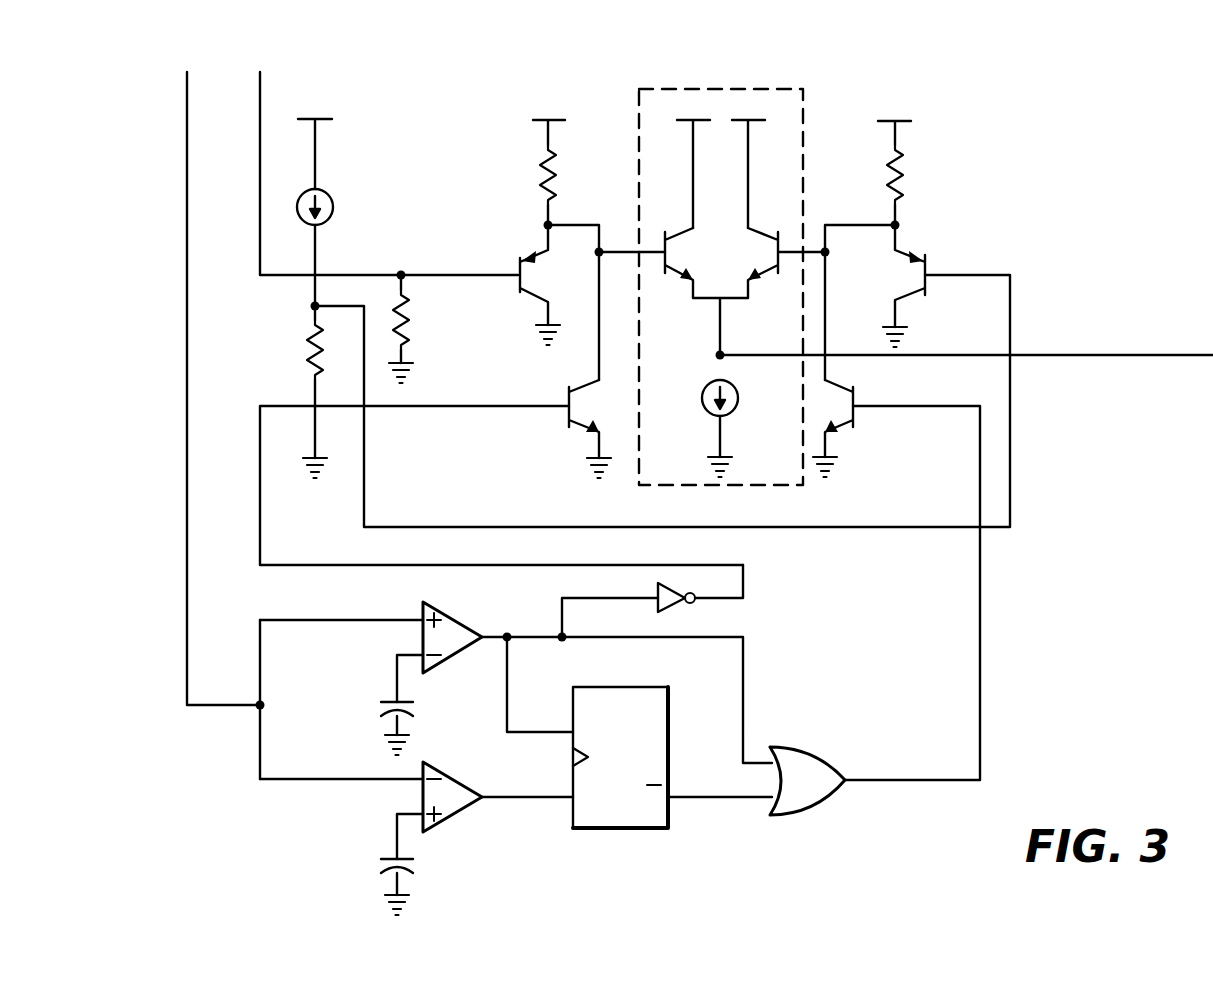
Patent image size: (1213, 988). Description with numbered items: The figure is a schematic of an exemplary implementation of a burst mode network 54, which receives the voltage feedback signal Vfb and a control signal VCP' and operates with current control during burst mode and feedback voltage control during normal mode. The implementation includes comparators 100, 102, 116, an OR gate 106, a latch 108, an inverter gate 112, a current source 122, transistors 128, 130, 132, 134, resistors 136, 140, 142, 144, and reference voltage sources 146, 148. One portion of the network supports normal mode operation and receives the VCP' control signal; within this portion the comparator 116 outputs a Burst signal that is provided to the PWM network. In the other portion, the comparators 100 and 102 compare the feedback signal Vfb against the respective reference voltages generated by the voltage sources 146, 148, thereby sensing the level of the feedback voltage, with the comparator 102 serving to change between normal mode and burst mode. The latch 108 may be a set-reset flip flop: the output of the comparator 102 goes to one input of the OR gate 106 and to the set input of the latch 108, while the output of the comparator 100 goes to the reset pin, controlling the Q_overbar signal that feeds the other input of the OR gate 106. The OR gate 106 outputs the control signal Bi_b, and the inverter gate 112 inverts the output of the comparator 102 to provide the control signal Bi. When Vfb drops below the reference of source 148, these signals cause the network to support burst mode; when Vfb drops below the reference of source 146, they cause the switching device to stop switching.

The burst mode network 54 is at (949, 90).
The comparator 100 is at (455, 815).
The comparator 102 is at (458, 615).
The OR gate 106 is at (775, 815).
The latch 108 is at (645, 830).
The inverter gate 112 is at (680, 606).
The comparator 116 is at (713, 88).
The current source 122 is at (322, 190).
The transistor 128 is at (513, 290).
The transistor 130 is at (558, 430).
The transistor 132 is at (930, 272).
The transistor 134 is at (860, 422).
The resistor 136 is at (305, 345).
The resistor 140 is at (405, 342).
The resistor 142 is at (533, 195).
The resistor 144 is at (905, 175).
The reference voltage source 146 is at (375, 870).
The reference voltage source 148 is at (375, 715).